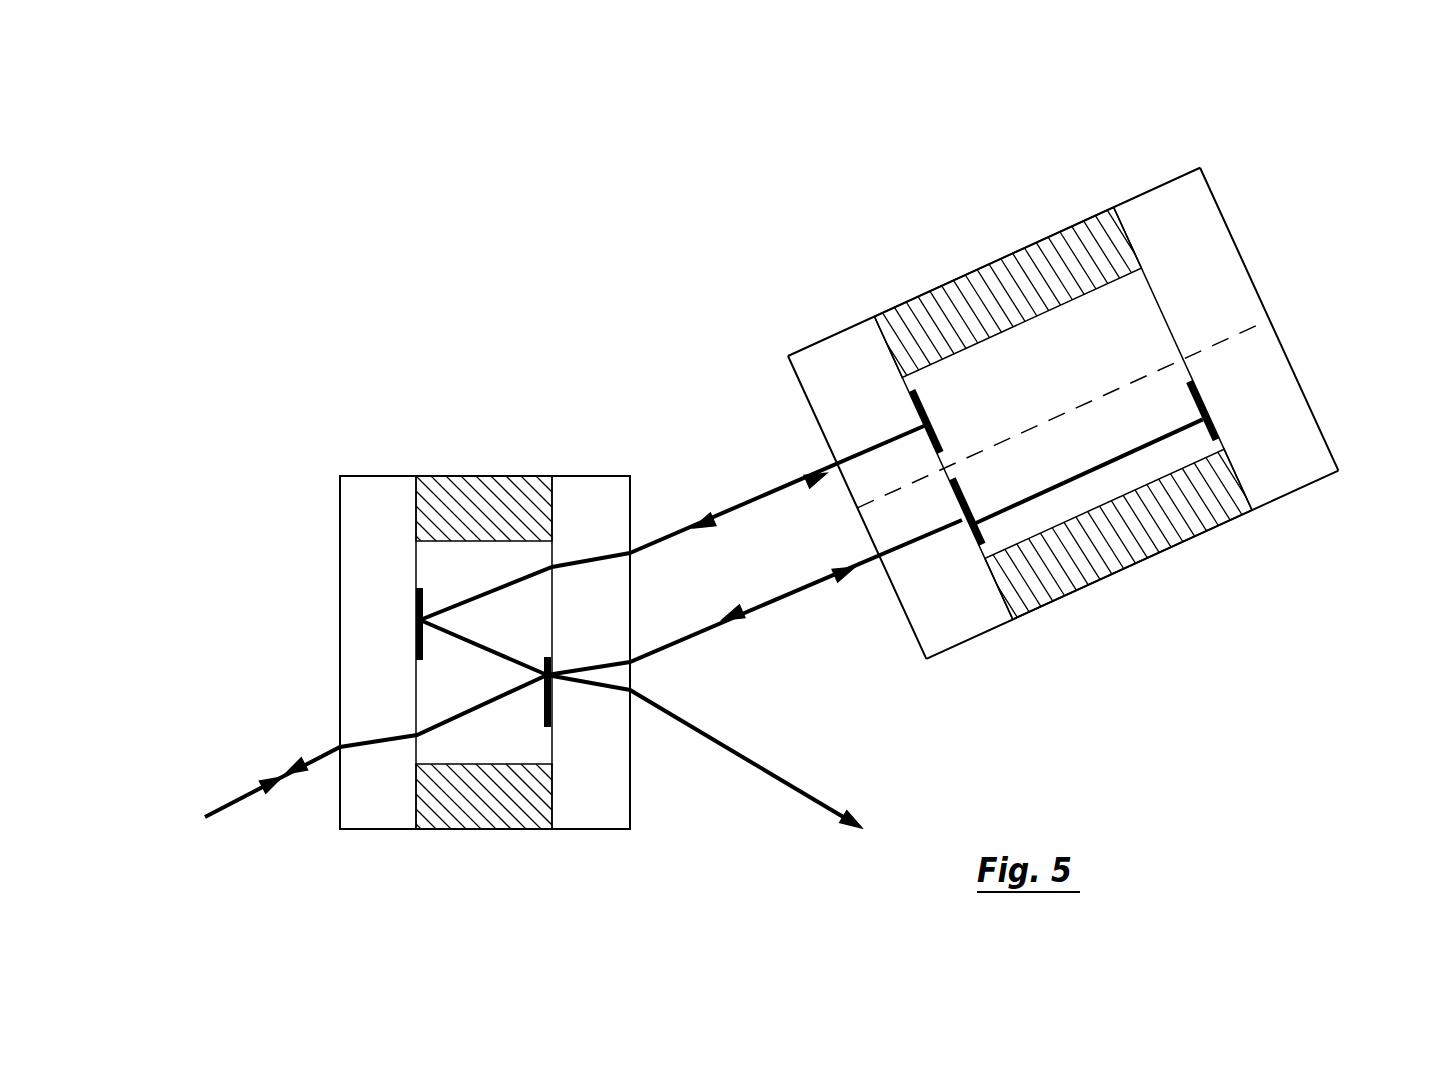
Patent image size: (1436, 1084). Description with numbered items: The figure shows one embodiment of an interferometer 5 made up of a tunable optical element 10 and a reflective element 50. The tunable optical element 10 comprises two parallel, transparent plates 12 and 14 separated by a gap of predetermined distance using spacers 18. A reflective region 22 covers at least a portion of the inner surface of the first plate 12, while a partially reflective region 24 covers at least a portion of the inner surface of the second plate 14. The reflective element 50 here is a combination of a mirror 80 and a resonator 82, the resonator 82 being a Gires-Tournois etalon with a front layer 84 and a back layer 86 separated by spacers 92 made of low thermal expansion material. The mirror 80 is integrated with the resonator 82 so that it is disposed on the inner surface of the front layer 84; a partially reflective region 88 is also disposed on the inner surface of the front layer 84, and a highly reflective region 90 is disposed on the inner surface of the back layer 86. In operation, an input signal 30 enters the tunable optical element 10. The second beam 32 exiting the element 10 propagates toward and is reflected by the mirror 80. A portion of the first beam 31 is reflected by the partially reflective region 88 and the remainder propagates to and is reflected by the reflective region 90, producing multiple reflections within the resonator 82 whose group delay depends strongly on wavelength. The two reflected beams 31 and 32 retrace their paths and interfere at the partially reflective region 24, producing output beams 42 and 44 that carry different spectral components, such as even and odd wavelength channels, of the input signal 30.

The interferometer 5 is at (637, 287).
The tunable optical element 10 is at (305, 501).
The first plate 12 is at (372, 493).
The second plate 14 is at (588, 493).
The spacers 18 is at (477, 497).
The reflective region 22 is at (416, 613).
The partially reflective region 24 is at (557, 705).
The input signal 30 is at (235, 807).
The first beam 31 is at (683, 637).
The second beam 32 is at (685, 527).
The output beam 42 is at (762, 770).
The output beam 44 is at (290, 764).
The reflective element 50 is at (972, 229).
The mirror 80 is at (927, 405).
The resonator 82 is at (1308, 403).
The front layer 84 is at (962, 615).
The back layer 86 is at (1153, 232).
The partially reflective region 88 is at (978, 528).
The reflective region 90 is at (1213, 423).
The spacers 92 is at (940, 315).